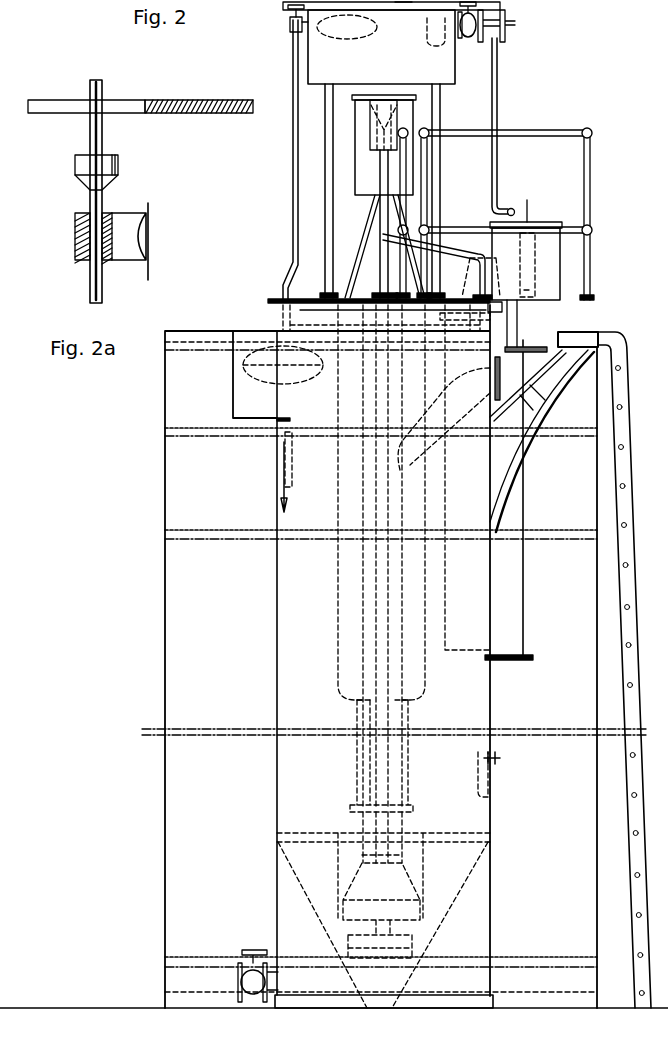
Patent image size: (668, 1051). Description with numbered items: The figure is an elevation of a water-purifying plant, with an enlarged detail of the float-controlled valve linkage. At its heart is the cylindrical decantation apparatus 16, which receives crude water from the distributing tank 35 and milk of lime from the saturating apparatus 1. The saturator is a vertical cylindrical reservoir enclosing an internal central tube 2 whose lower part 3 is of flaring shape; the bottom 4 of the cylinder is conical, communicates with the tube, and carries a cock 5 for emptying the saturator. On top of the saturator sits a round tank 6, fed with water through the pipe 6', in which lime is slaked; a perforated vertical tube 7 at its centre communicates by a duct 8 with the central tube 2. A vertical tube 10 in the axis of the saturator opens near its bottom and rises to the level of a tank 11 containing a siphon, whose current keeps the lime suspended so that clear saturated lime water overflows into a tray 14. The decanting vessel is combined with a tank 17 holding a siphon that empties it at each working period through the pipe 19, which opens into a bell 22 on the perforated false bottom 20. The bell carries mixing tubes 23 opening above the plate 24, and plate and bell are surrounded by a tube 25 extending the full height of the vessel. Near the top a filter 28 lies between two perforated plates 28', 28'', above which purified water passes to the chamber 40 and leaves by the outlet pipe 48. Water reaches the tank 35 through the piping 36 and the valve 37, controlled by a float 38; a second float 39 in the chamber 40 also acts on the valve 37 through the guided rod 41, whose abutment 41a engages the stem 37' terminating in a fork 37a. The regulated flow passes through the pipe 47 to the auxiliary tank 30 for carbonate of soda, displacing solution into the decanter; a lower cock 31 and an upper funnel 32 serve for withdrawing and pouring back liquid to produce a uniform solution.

In FIG. 2, the saturating apparatus 1 is at (280, 788).
In FIG. 2, the internal central tube 2 is at (370, 646).
In FIG. 2, the lower part of the central tube 3 is at (355, 888).
In FIG. 2, the bottom of the cylinder 4 is at (440, 917).
In FIG. 2, the cock 5 is at (247, 970).
In FIG. 2, the round tank 6 is at (552, 267).
In FIG. 2, the pipe 6' is at (518, 127).
In FIG. 2, the perforated vertical tube 7 is at (535, 248).
In FIG. 2, the duct 8 is at (548, 375).
In FIG. 2, the vertical tube 10 is at (385, 272).
In FIG. 2, the tank 11 is at (375, 135).
In FIG. 2, the tray 14 is at (322, 327).
In FIG. 2, the decantation apparatus 16 is at (170, 656).
In FIG. 2, the tank 17 is at (368, 173).
In FIG. 2, the pipe 19 is at (378, 218).
In FIG. 2, the false bottom 20 is at (500, 957).
In FIG. 2, the bell 22 is at (405, 850).
In FIG. 2, the mixing tubes 23 is at (356, 749).
In FIG. 2, the plate 24 is at (420, 698).
In FIG. 2, the tube 25 is at (342, 783).
In FIG. 2, the filter 28 is at (575, 670).
In FIG. 2, the perforated plate 28' is at (362, 418).
In FIG. 2, the perforated plate 28'' is at (361, 521).
In FIG. 2, the auxiliary tank 30 is at (516, 616).
In FIG. 2, the lower cock 31 is at (498, 758).
In FIG. 2, the upper funnel 32 is at (478, 278).
In FIG. 2, the tank 35 is at (322, 78).
In FIG. 2, the piping 36 is at (505, 22).
In FIG. 2, the valve 37 is at (454, 46).
In FIG. 2A, the stem 37' is at (199, 91).
In FIG. 2, the stem 37' is at (400, 20).
In FIG. 2A, the fork 37a is at (70, 100).
In FIG. 2, the float 38 is at (350, 32).
In FIG. 2, the second float 39 is at (292, 380).
In FIG. 2, the chamber 40 is at (245, 393).
In FIG. 2A, the guided rod 41 is at (102, 285).
In FIG. 2, the guided rod 41 is at (296, 210).
In FIG. 2A, the abutment 41a is at (118, 163).
In FIG. 2, the abutment 41a is at (292, 12).
In FIG. 2, the pipe 47 is at (463, 250).
In FIG. 2, the outlet pipe 48 is at (282, 457).